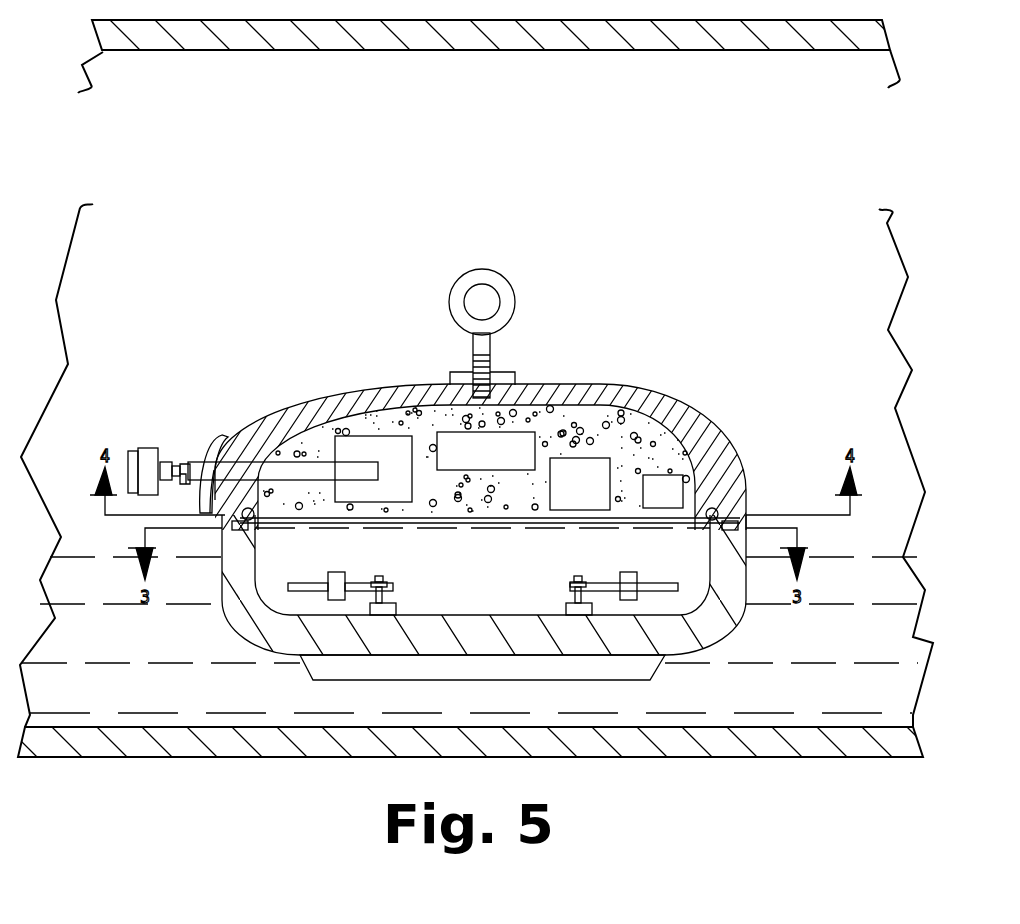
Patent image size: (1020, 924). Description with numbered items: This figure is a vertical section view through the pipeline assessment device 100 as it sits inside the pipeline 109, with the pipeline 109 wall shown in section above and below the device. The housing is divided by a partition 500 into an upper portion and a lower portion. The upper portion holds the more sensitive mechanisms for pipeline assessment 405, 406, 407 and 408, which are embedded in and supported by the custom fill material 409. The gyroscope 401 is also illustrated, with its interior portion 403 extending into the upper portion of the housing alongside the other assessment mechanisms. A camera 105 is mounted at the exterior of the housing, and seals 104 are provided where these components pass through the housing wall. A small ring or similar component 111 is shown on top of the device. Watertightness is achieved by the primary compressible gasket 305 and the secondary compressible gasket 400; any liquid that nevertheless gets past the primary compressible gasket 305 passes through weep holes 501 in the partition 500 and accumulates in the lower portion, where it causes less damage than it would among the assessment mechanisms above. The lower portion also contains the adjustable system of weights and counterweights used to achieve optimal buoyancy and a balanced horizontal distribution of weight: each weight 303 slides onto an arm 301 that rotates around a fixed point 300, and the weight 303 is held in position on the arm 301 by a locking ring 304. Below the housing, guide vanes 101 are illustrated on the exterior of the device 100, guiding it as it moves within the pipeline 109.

The pipeline assessment device 100 is at (225, 622).
The guide vanes 101 is at (645, 672).
The seals 104 is at (236, 428).
The camera 105 is at (126, 452).
The pipeline 109 is at (182, 58).
The small ring 111 is at (438, 280).
The fixed point 300 is at (402, 604).
The arm 301 is at (598, 586).
The weight 303 is at (352, 562).
The locking ring 304 is at (633, 572).
The primary compressible gasket 305 is at (242, 530).
The secondary compressible gasket 400 is at (262, 483).
The gyroscope 401 is at (176, 450).
The interior portion of the gyroscope 403 is at (325, 445).
The mechanism for pipeline assessment 405 is at (679, 502).
The mechanism for pipeline assessment 406 is at (411, 467).
The mechanism for pipeline assessment 407 is at (503, 465).
The mechanism for pipeline assessment 408 is at (596, 493).
The custom fill material 409 is at (597, 425).
The partition 500 is at (697, 495).
The weep holes 501 is at (255, 535).